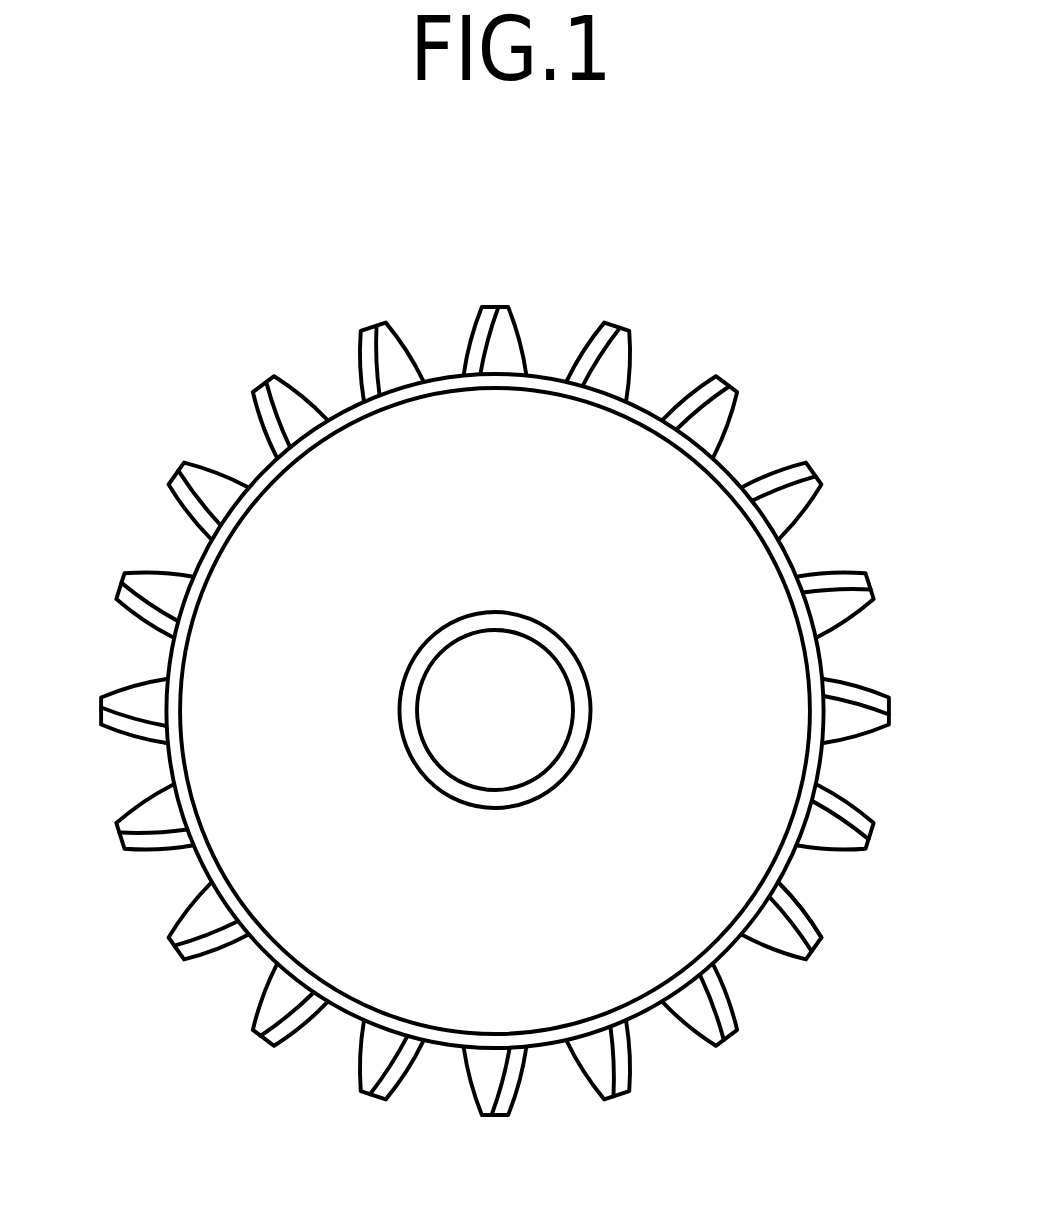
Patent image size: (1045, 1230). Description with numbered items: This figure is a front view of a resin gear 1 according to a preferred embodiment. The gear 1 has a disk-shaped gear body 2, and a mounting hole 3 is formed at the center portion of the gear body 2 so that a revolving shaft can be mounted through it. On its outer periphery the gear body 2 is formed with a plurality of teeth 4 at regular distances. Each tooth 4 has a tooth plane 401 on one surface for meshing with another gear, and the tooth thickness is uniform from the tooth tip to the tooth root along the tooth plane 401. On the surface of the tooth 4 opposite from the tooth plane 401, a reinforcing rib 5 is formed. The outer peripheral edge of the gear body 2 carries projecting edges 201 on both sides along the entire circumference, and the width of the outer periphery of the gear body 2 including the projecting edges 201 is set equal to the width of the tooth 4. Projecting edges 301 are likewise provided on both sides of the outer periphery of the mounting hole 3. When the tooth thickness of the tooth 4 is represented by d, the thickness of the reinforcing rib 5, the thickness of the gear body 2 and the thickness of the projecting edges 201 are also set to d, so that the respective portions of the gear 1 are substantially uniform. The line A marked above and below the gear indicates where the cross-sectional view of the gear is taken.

The gear 1 is at (495, 710).
The gear body 2 is at (495, 711).
The projecting edges 201 is at (494, 711).
The mounting hole 3 is at (494, 710).
The projecting edges 301 is at (495, 710).
The tooth 4 is at (817, 948).
The tooth plane 401 is at (812, 920).
The reinforcing rib 5 is at (780, 938).
The tooth thickness d is at (509, 341).
The line A- A is at (496, 225).